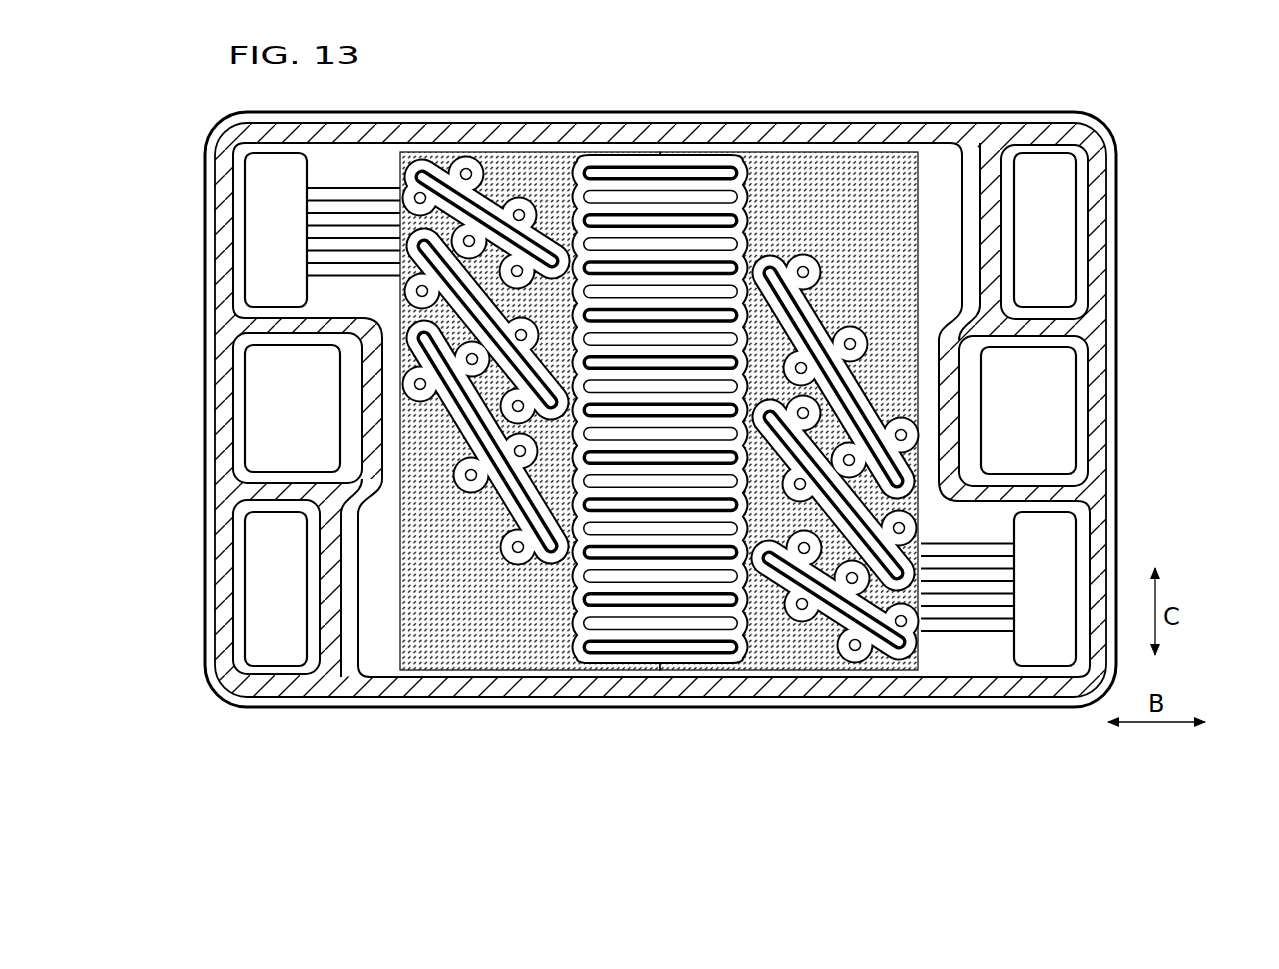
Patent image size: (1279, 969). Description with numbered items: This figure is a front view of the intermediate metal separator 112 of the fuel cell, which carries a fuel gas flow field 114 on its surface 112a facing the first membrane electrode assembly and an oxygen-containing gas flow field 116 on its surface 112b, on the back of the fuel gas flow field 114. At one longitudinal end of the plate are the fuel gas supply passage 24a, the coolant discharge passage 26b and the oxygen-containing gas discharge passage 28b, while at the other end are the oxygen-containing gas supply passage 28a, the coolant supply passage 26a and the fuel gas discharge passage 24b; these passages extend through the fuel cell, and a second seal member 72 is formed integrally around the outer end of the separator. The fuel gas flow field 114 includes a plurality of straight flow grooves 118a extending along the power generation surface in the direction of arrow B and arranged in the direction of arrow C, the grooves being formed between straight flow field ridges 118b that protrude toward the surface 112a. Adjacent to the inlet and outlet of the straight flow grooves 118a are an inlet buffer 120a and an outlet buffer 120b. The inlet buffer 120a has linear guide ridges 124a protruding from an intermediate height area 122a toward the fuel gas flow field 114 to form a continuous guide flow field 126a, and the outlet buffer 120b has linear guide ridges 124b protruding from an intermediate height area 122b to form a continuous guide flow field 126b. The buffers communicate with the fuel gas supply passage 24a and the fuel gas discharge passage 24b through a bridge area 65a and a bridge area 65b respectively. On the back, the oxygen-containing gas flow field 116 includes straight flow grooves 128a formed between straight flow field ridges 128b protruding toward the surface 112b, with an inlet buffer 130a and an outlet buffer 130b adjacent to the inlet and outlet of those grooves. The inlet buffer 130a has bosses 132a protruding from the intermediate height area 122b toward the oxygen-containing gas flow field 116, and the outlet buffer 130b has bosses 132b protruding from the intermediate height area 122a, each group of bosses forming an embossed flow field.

The intermediate metal separator 112 is at (980, 50).
The surface 112a is at (970, 706).
The surface 112b is at (1024, 708).
The fuel gas flow field 114 is at (705, 172).
The oxygen-containing gas flow field 116 is at (657, 168).
The straight flow grooves 118a is at (615, 197).
The straight flow field ridges 118b is at (610, 647).
The inlet buffer 120a is at (433, 632).
The outlet buffer 120b is at (890, 188).
The intermediate height area 122a is at (445, 628).
The intermediate height area 122b is at (875, 195).
The linear guide ridges 124a is at (492, 212).
The linear guide ridges 124b is at (832, 585).
The continuous guide flow field 126a is at (435, 278).
The continuous guide flow field 126b is at (886, 542).
The straight flow grooves 128a is at (657, 489).
The straight flow field ridges 128b is at (667, 477).
The inlet buffer 130a is at (858, 374).
The outlet buffer 130b is at (489, 451).
The bosses 132a is at (903, 626).
The bosses 132b is at (408, 170).
The fuel gas supply passage 24a is at (276, 230).
The fuel gas discharge passage 24b is at (1045, 589).
The coolant supply passage 26a is at (1023, 408).
The coolant discharge passage 26b is at (275, 424).
The oxygen-containing gas supply passage 28a is at (1045, 230).
The oxygen-containing gas discharge passage 28b is at (276, 589).
The bridge area 65a is at (340, 256).
The bridge area 65b is at (975, 565).
The second seal member 72 is at (1076, 132).